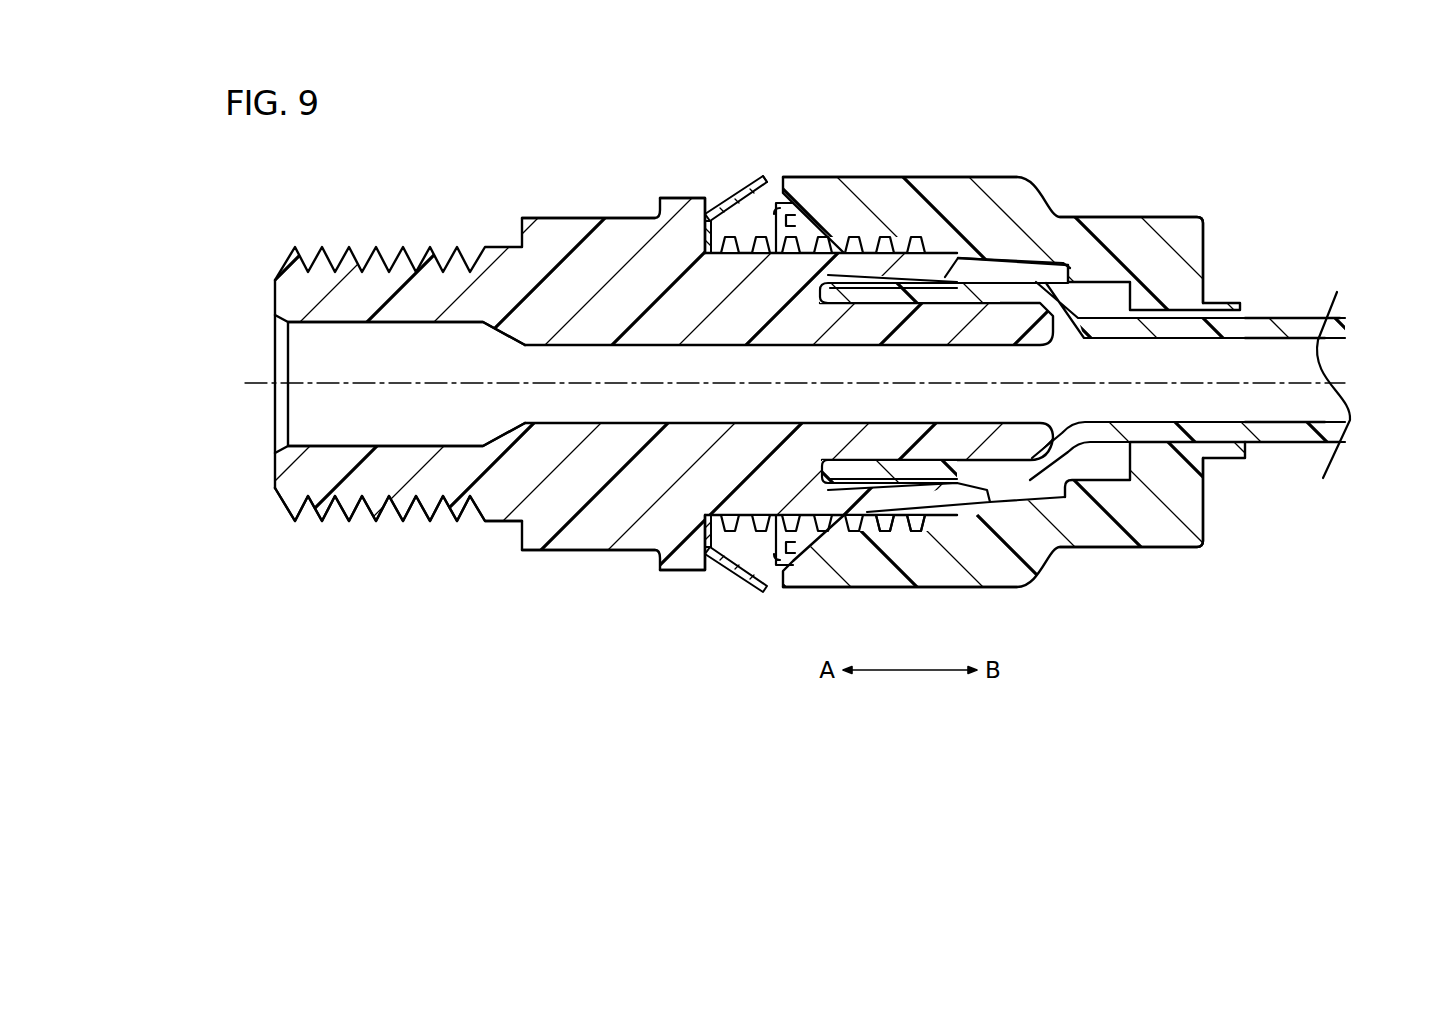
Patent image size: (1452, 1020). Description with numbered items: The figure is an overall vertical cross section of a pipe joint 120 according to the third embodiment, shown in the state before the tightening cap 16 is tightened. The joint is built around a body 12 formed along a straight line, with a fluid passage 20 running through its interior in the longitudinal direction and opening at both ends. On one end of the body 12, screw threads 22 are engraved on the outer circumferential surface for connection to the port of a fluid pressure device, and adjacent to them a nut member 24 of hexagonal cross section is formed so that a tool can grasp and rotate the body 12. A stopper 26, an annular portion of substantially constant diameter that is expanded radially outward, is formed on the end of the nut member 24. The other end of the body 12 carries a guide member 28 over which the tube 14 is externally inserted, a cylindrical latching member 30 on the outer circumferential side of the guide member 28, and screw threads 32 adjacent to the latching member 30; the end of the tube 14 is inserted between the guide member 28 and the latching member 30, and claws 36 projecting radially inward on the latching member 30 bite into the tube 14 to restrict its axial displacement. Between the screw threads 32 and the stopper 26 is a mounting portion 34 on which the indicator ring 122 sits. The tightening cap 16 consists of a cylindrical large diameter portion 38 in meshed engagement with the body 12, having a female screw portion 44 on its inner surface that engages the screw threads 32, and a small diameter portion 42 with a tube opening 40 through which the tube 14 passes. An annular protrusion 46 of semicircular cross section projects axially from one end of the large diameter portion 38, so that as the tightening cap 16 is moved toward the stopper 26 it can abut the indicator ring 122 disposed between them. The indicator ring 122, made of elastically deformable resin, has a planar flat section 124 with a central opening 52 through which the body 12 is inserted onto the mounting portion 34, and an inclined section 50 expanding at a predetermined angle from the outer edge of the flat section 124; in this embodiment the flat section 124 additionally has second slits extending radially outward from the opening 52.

The pipe joint 120 is at (680, 103).
The body 12 is at (552, 570).
The tube 14 is at (1293, 325).
The tightening cap 16 is at (997, 154).
The fluid passage 20 is at (380, 323).
The screw threads 22 is at (362, 523).
The nut member 24 is at (566, 226).
The stopper 26 is at (690, 200).
The guide member 28 is at (1000, 334).
The latching member 30 is at (975, 263).
The screw threads 32 is at (835, 524).
The mounting portion 34 is at (713, 560).
The claws 36 is at (960, 292).
The large diameter portion 38 is at (888, 190).
The tube opening 40 is at (1172, 326).
The small diameter portion 42 is at (1155, 236).
The female screw portion 44 is at (928, 525).
The protrusion 46 is at (735, 255).
The inclined section 50 is at (713, 212).
The opening 52 is at (712, 519).
The indicator ring 122 is at (764, 176).
The flat section 124 is at (707, 238).